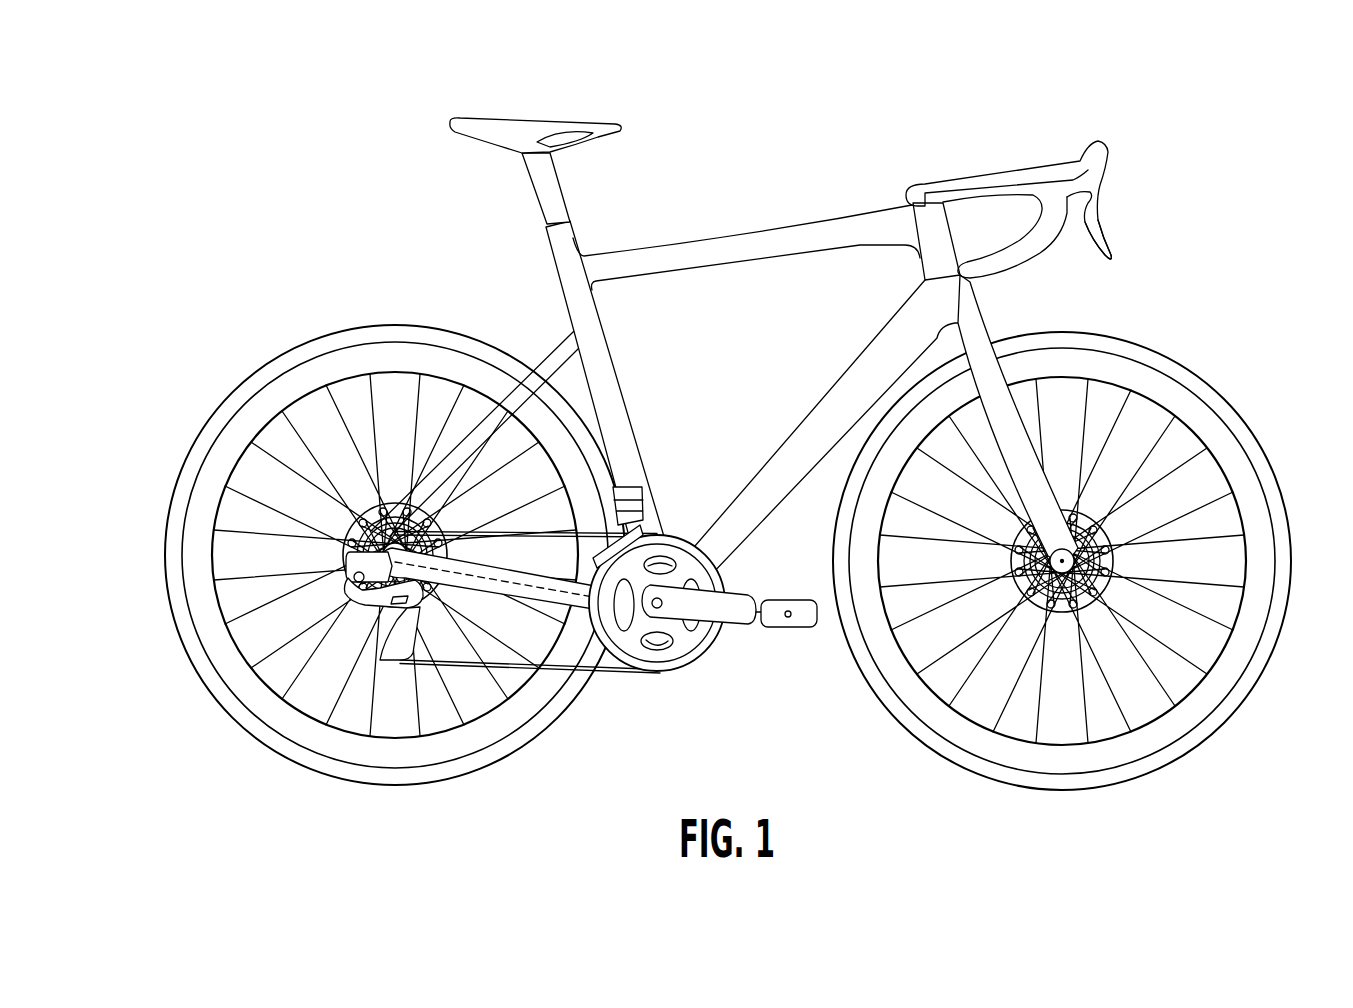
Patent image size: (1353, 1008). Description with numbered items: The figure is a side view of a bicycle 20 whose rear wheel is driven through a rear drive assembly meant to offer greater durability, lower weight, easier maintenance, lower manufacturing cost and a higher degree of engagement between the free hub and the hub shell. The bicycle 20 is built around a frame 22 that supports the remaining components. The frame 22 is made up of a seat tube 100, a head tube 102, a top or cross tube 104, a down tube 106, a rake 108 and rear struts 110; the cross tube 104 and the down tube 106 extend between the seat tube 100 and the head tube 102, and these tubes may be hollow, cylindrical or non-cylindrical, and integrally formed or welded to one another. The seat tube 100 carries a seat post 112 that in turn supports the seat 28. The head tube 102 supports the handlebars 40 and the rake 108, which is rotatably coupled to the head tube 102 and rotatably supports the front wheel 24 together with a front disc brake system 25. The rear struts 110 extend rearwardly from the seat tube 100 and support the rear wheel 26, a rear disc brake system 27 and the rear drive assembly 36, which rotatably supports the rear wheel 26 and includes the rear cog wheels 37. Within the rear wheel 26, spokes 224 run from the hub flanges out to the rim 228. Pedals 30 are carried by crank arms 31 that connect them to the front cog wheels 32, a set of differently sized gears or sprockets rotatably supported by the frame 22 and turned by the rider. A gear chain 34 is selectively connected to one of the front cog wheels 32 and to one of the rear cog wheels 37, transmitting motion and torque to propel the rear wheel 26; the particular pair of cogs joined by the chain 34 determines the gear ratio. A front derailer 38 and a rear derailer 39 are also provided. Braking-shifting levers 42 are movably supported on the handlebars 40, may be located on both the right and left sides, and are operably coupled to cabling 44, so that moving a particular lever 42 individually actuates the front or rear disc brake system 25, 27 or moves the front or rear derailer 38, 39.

The bicycle 20 is at (700, 449).
The frame 22 is at (585, 382).
The front wheel 24 is at (1062, 553).
The front disc brake system 25 is at (1115, 582).
The rear wheel 26 is at (367, 523).
The rear disc brake system 27 is at (388, 475).
The seat 28 is at (510, 128).
The pedals 30 is at (787, 630).
The crank arms 31 is at (743, 603).
The front cog wheels 32 is at (709, 646).
The gear chain 34 is at (597, 677).
The rear drive assembly 36 is at (365, 537).
The rear cog wheels 37 is at (362, 541).
The front derailer 38 is at (645, 485).
The rear derailer 39 is at (380, 640).
The handlebars 40 is at (1035, 186).
The braking-shifting levers 42 is at (1107, 227).
The cabling 44 is at (960, 180).
The seat tube 100 is at (593, 340).
The head tube 102 is at (872, 240).
The top or cross tube 104 is at (817, 232).
The down tube 106 is at (852, 373).
The rake 108 is at (1040, 414).
The rear struts 110 is at (547, 348).
The seat post 112 is at (530, 188).
The spokes 224 is at (273, 645).
The rim 228 is at (203, 638).